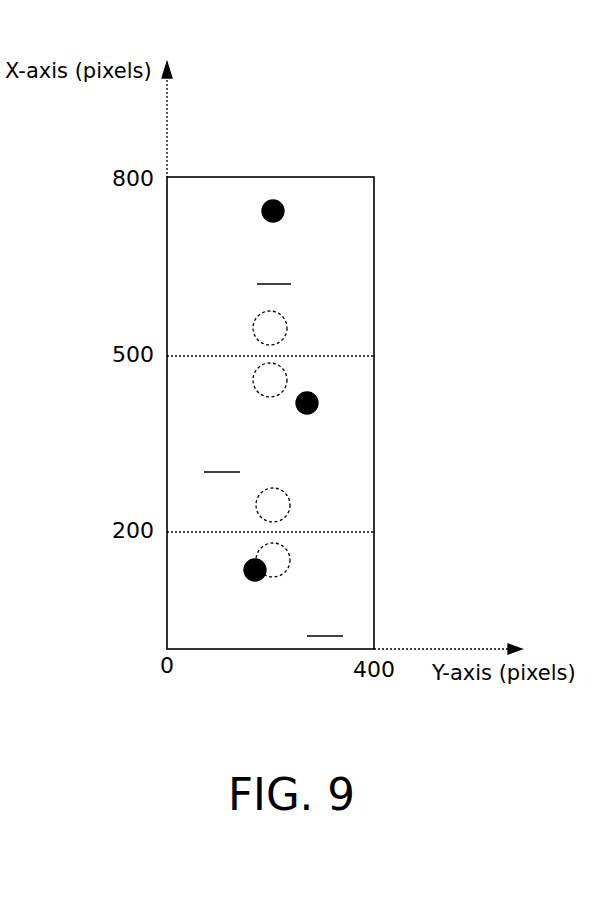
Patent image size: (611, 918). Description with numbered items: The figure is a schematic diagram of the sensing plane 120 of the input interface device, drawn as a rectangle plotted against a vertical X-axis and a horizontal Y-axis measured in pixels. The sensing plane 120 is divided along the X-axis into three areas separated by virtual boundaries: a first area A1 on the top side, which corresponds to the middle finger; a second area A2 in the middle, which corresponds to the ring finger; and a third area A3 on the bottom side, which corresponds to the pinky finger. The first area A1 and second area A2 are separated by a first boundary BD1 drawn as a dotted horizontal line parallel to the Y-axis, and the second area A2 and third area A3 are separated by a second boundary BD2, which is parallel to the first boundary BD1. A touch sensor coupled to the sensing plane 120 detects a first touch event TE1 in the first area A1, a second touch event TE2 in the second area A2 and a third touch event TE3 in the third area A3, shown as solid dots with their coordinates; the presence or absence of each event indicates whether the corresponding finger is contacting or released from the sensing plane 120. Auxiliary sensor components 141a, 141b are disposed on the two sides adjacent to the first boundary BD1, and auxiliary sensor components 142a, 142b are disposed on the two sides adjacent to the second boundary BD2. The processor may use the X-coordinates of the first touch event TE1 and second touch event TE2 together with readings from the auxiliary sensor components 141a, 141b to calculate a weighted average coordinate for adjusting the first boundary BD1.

The sensing plane 120 is at (374, 207).
The first touch event TE1 is at (277, 200).
The second touch event TE2 is at (318, 401).
The third touch event TE3 is at (266, 575).
The auxiliary sensor component 141a is at (288, 328).
The auxiliary sensor component 141b is at (288, 378).
The auxiliary sensor component 142a is at (290, 497).
The auxiliary sensor component 142b is at (290, 552).
The first boundary BD1 is at (215, 356).
The second boundary BD2 is at (217, 532).
The first area A1 is at (272, 257).
The second area A2 is at (283, 445).
The third area A3 is at (269, 611).